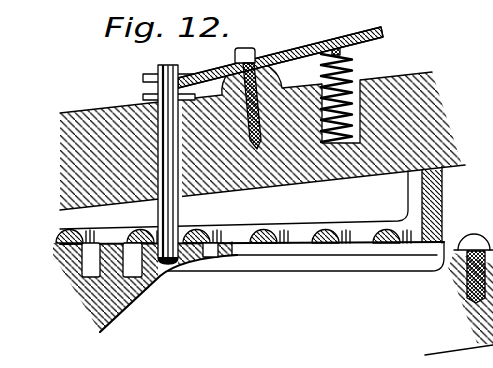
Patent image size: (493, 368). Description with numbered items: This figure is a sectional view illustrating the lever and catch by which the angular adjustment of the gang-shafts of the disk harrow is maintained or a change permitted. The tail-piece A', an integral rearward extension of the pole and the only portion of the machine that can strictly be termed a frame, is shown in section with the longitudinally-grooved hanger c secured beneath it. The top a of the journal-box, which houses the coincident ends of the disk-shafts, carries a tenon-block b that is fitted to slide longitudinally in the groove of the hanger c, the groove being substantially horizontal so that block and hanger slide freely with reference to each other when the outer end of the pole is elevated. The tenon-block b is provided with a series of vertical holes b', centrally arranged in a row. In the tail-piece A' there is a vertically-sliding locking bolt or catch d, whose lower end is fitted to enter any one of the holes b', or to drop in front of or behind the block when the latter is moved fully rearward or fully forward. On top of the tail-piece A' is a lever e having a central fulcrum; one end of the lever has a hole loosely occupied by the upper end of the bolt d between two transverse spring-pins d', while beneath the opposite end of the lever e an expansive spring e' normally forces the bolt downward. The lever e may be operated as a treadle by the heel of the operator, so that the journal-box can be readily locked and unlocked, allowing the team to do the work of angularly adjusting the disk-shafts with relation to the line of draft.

The tail-piece A' is at (265, 135).
The top of the journal-box a is at (145, 287).
The tenon-block b is at (233, 266).
The vertical holes b' is at (169, 275).
The hanger c is at (252, 218).
The locking bolt or catch d is at (185, 154).
The transverse spring-pins d' is at (156, 81).
The lever e is at (280, 88).
The expansive spring e' is at (344, 93).